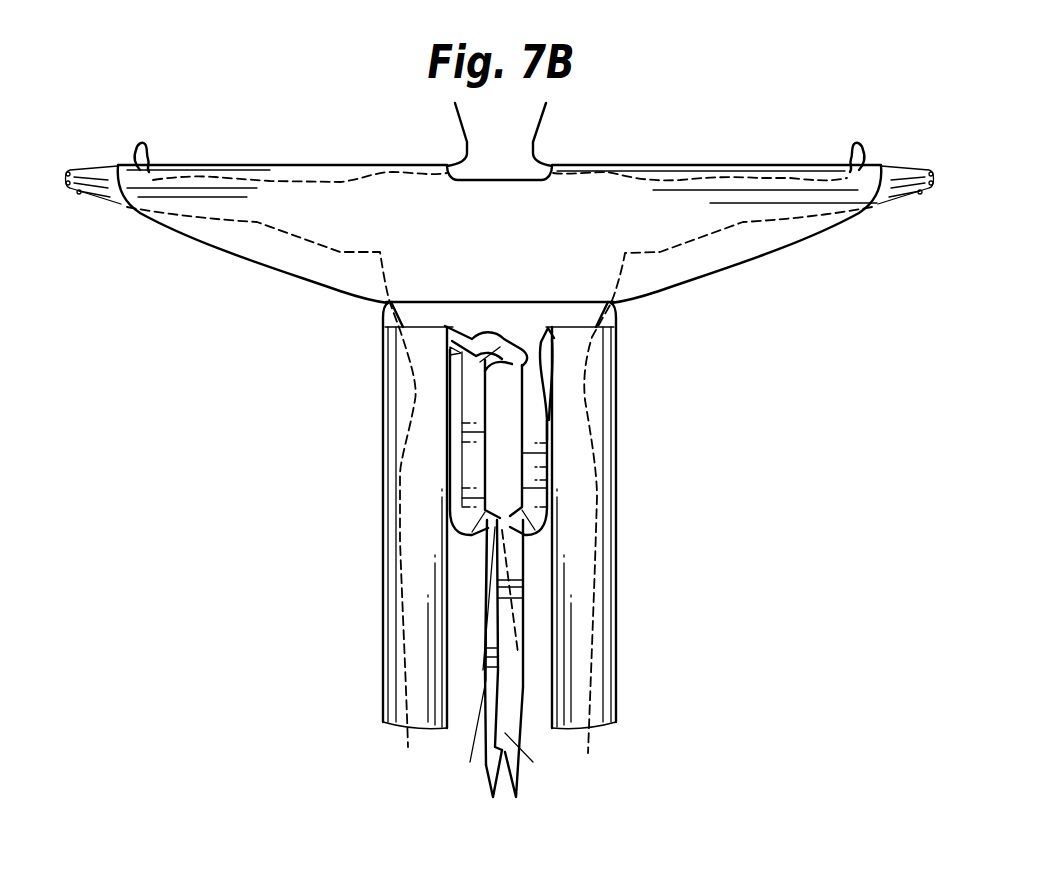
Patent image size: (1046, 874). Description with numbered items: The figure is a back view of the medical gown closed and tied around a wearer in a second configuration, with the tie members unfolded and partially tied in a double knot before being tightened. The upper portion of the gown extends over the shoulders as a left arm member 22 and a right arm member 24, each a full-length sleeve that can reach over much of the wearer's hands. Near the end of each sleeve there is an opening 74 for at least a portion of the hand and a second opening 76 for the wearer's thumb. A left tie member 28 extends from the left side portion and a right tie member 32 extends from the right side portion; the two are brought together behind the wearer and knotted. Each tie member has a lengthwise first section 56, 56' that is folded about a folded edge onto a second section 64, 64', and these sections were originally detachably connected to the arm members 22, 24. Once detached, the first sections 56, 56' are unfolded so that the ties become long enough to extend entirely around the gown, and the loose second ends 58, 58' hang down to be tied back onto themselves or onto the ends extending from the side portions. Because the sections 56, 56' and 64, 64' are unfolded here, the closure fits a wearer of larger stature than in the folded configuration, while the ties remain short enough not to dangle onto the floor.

The left arm member 22 is at (317, 176).
The right arm member 24 is at (659, 190).
The tie member 28 is at (462, 347).
The tie member 32 is at (556, 338).
The first section 56 is at (411, 642).
The first section 56' is at (579, 641).
The second end 58 is at (456, 781).
The second end 58' is at (549, 750).
The second section 64 is at (595, 450).
The second section 64' is at (409, 442).
The opening 74 is at (135, 207).
The second opening 76 is at (140, 157).